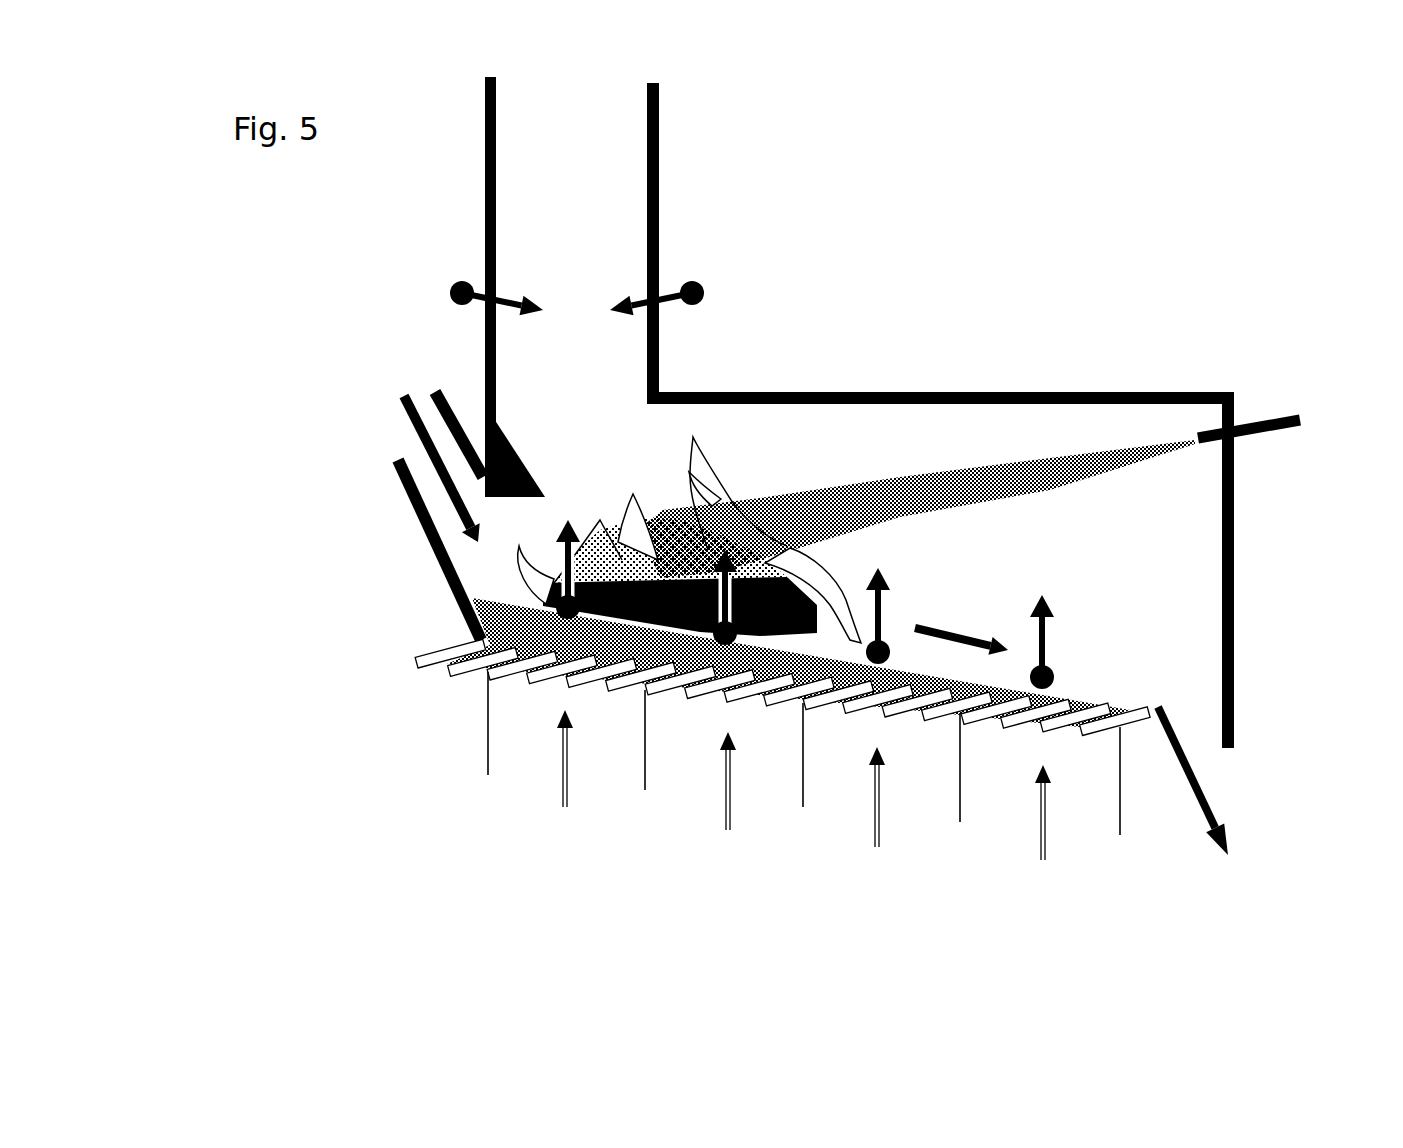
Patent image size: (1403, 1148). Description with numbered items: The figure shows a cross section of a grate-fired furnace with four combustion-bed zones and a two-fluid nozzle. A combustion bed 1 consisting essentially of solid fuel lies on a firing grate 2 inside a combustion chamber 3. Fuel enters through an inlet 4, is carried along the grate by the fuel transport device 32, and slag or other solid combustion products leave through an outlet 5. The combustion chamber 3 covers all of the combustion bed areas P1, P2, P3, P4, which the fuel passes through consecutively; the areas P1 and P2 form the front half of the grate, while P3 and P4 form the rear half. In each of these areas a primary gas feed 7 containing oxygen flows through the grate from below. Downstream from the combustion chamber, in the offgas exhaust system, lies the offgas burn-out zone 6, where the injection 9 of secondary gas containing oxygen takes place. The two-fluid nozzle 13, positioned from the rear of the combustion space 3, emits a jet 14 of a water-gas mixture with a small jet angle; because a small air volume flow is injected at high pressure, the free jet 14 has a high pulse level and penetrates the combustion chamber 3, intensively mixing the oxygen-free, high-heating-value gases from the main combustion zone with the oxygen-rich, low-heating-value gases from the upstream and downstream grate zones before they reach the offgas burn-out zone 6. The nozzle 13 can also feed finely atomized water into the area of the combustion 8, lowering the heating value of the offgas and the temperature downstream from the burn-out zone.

The combustion bed 1 is at (487, 653).
The firing grate 2 is at (1117, 728).
The combustion chamber 3 is at (1155, 553).
The inlet 4 is at (453, 508).
The outlet 5 is at (1188, 745).
The offgas burn-out zone 6 is at (575, 235).
The primary gas feed 7 is at (806, 809).
The combustion 8 is at (790, 505).
The injection of secondary gas 9 is at (455, 282).
The two-fluid nozzle 13 is at (1262, 420).
The jet 14 is at (958, 487).
The fuel transport device 32 is at (940, 625).
The combustion bed area P1 is at (569, 554).
The combustion bed area P2 is at (718, 575).
The combustion bed area P3 is at (872, 594).
The combustion bed area P4 is at (1035, 619).